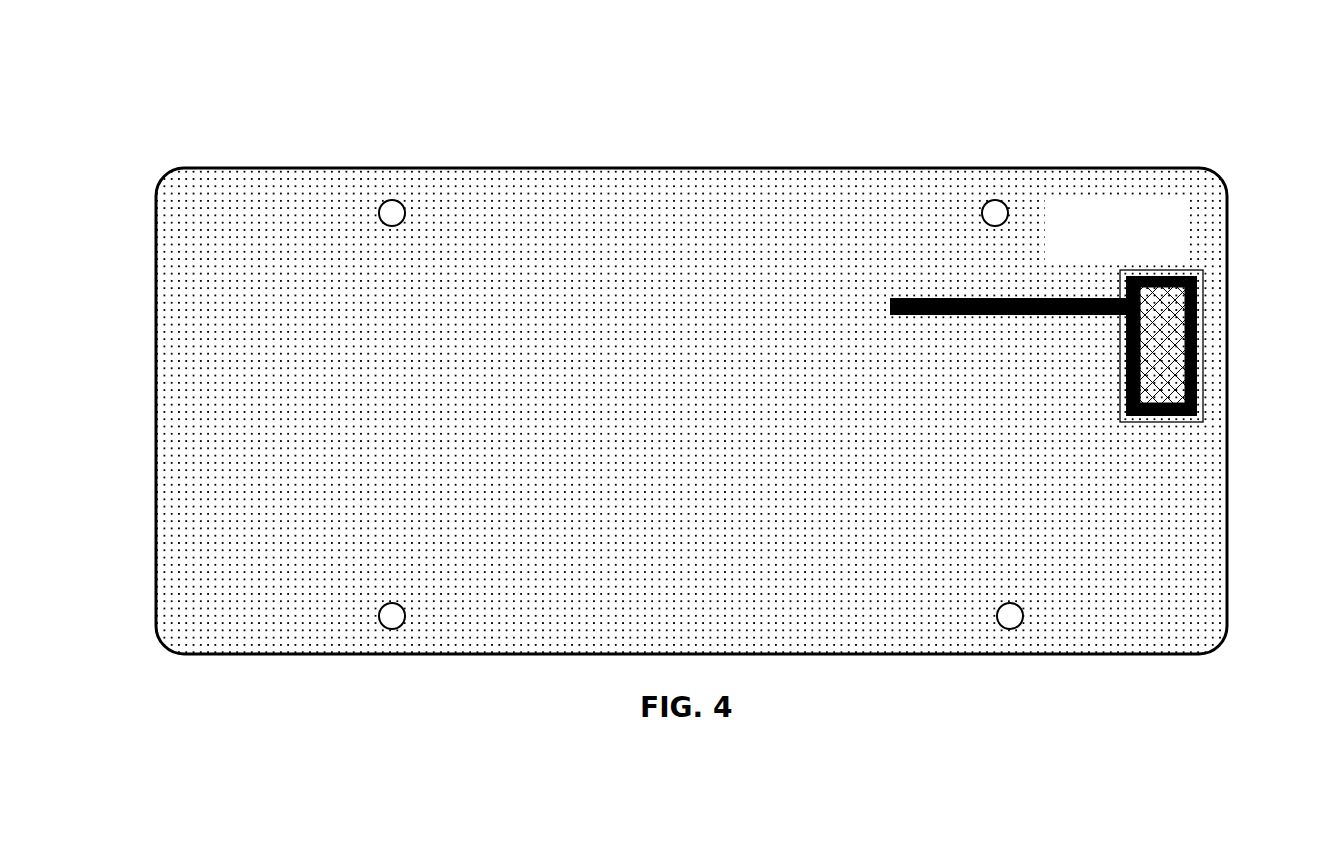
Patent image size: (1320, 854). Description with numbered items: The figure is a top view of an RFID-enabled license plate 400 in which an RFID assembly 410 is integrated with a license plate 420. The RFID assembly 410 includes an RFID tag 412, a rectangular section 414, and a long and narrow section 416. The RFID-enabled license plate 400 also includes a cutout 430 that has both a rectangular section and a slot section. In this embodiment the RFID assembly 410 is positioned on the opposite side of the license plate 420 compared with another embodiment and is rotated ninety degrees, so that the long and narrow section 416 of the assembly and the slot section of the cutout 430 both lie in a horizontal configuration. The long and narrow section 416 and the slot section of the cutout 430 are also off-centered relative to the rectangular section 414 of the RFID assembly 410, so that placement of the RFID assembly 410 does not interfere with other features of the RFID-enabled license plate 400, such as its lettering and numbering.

The RFID-enabled license plate 400 is at (711, 346).
The license plate 420 is at (1098, 170).
The RFID assembly 410 is at (1069, 347).
The RFID tag 412 is at (1202, 273).
The rectangular section 414 is at (1220, 345).
The long and narrow section 416 is at (942, 317).
The cutout 430 is at (1120, 320).